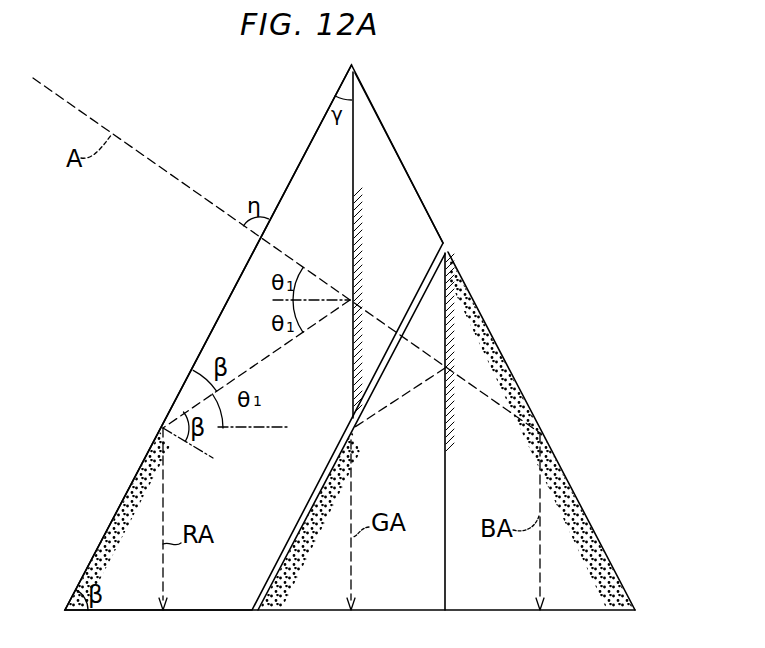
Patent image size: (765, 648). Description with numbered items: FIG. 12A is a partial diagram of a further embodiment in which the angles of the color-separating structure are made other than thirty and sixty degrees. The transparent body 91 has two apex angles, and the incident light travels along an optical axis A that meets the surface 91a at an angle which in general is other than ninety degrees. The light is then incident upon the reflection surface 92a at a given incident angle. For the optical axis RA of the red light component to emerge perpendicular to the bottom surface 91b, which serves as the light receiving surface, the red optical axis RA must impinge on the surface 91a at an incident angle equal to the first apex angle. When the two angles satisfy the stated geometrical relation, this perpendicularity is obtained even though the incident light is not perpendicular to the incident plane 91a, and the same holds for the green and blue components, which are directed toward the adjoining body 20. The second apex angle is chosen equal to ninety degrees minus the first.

The second prism 20 is at (530, 365).
The transparent body 91 is at (280, 488).
The surface 91a is at (224, 305).
The bottom surface 91b is at (203, 612).
The reflection surface 92a is at (353, 233).